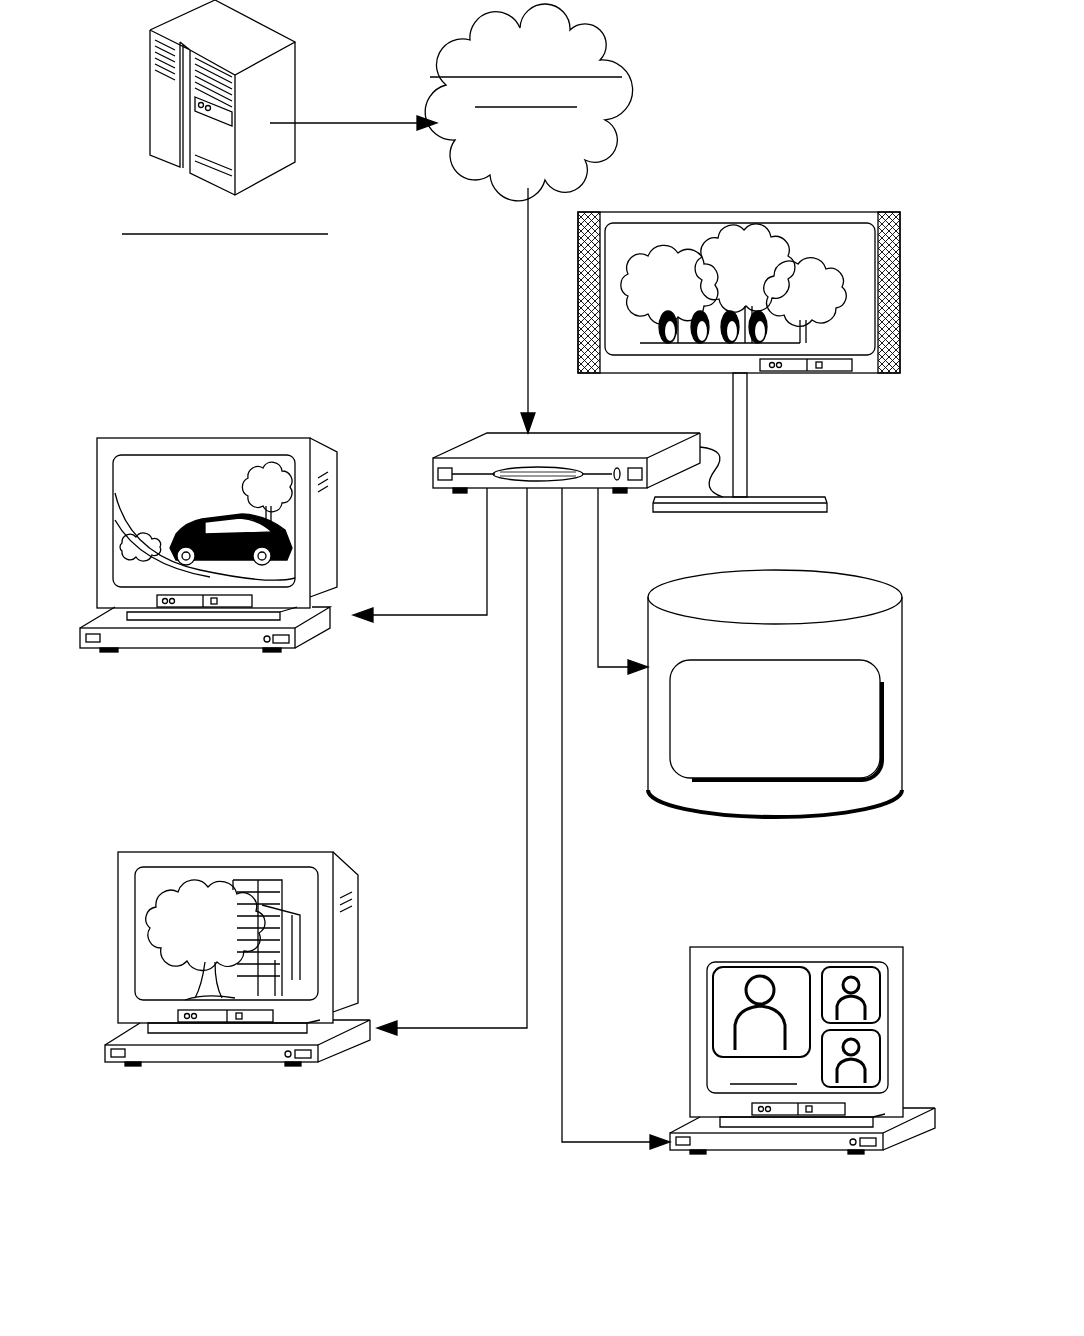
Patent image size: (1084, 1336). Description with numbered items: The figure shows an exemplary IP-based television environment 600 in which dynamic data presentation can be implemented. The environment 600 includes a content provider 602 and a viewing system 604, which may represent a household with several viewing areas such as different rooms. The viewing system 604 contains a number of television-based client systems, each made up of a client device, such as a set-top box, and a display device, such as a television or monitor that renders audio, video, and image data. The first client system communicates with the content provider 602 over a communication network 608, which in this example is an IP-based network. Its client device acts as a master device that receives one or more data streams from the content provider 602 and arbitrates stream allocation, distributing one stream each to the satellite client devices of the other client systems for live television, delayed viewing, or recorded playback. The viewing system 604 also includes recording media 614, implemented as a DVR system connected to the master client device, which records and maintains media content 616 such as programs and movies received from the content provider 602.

The IPTV environment 600 is at (779, 55).
The content provider 602 is at (201, 262).
The viewing system 604 is at (468, 312).
The communication network 608 is at (501, 161).
The recording media 614 is at (751, 644).
The media content 616 is at (751, 761).